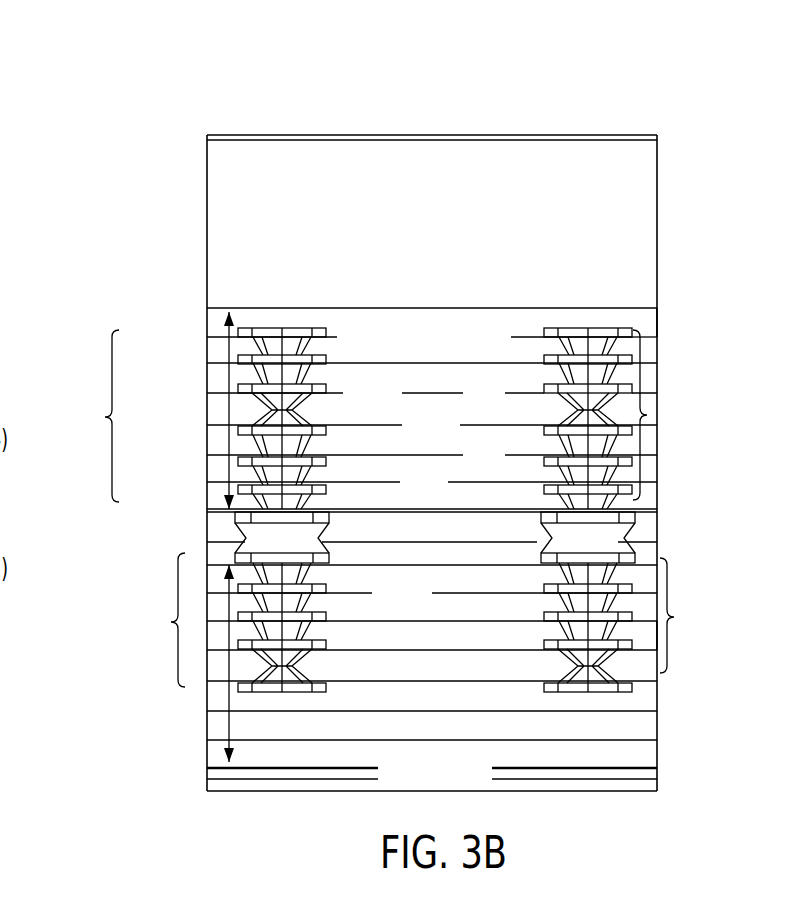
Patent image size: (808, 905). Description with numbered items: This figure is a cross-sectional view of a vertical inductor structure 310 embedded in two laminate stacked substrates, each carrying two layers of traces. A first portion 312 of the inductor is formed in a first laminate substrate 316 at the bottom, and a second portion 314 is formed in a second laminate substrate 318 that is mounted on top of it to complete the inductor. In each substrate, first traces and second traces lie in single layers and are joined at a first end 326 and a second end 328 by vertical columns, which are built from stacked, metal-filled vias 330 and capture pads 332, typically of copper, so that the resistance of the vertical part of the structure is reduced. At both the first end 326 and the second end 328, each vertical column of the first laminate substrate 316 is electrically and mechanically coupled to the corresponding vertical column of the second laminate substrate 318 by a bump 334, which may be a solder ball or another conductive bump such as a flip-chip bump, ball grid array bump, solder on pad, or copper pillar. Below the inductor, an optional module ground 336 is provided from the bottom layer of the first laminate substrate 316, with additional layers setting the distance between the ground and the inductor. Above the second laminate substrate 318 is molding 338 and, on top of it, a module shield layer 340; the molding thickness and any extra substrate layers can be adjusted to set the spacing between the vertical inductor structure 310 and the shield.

The vertical inductor structure 310 is at (581, 104).
The first portion 312 is at (693, 729).
The second portion 314 is at (709, 393).
The first laminate substrate 316 is at (220, 755).
The second laminate substrate 318 is at (213, 317).
The first end 326 is at (167, 731).
The second end 328 is at (704, 271).
The metal-filled vias 330 is at (569, 418).
The capture pads 332 is at (327, 432).
The bump 334 is at (627, 535).
The module ground 336 is at (532, 773).
The molding 338 is at (220, 217).
The module shield layer 340 is at (327, 135).